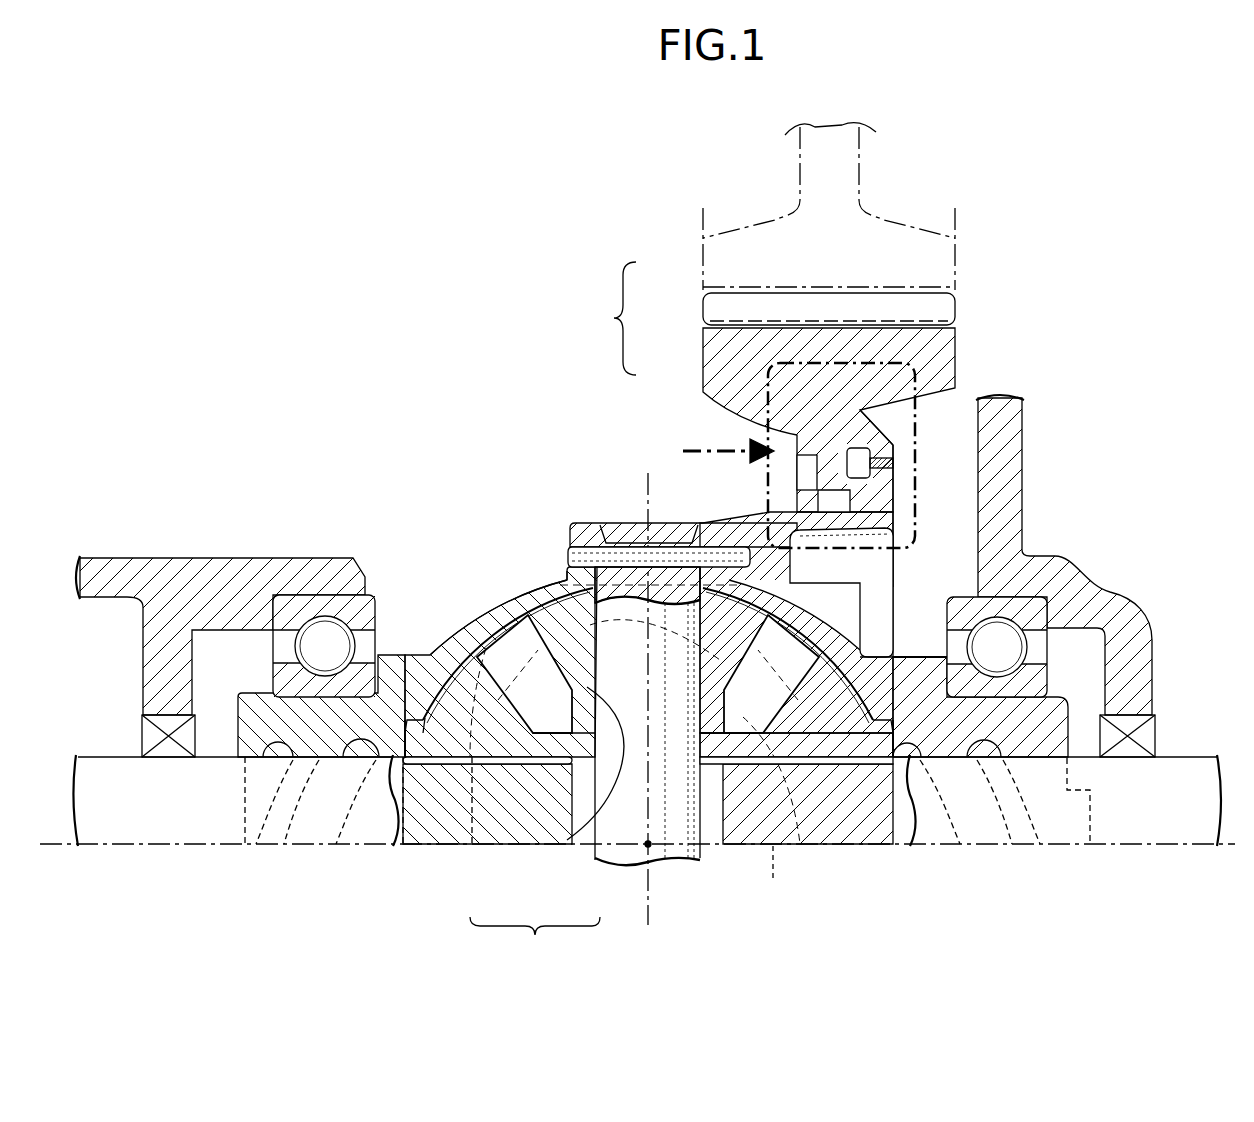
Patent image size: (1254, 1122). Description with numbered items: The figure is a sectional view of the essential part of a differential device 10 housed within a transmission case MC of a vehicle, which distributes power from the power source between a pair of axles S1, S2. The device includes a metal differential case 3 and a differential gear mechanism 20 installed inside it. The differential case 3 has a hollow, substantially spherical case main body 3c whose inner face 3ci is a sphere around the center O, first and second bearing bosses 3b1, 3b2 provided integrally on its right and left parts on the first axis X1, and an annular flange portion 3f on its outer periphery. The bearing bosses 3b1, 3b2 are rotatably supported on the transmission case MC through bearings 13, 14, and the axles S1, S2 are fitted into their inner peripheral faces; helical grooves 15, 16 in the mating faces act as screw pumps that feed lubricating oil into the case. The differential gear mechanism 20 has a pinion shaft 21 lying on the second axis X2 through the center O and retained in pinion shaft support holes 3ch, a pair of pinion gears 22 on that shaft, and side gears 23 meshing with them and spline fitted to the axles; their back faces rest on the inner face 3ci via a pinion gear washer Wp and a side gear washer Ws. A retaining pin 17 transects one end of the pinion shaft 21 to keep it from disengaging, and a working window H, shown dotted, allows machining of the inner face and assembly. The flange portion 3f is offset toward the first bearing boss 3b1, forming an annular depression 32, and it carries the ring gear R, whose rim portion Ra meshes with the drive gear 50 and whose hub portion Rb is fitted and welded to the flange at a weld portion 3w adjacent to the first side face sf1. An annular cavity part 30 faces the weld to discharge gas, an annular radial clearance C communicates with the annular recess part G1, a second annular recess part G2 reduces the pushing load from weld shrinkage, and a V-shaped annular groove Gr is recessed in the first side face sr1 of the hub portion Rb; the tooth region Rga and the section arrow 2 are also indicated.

The drive gear 50 is at (800, 155).
The ring gear R is at (616, 318).
The rim portion Ra is at (702, 349).
The hub portion Rb is at (795, 441).
The rotor gap Rga is at (822, 312).
The cavity part 30 is at (860, 452).
The weld portion 3w is at (893, 465).
The first side face sr1 is at (896, 452).
The first side face sf1 is at (895, 500).
The annular groove Gr is at (866, 426).
The annular recess part G1 is at (846, 496).
The second annular recess part G2 is at (800, 470).
The flange portion 3f is at (833, 513).
The radial clearance C is at (841, 592).
The section arrow 2 is at (784, 455).
The differential device 10 is at (497, 518).
The differential case 3 is at (576, 523).
The pinion shaft support hole 3ch is at (614, 524).
The case main body 3c is at (470, 616).
The inner face 3ci is at (500, 645).
The side gear washer Ws is at (423, 713).
The pinion gear washer Wp is at (568, 580).
The retaining pin 17 is at (685, 554).
The transmission case MC is at (122, 557).
The bearing 14 is at (322, 630).
The bearing 13 is at (948, 599).
The second bearing boss 3b2 is at (258, 702).
The first bearing boss 3b1 is at (1030, 722).
The annular depression 32 is at (867, 647).
The axle S2 is at (128, 817).
The axle S1 is at (1147, 817).
The helical groove 16 is at (275, 762).
The helical groove 15 is at (988, 762).
The differential gear mechanism 20 is at (535, 941).
The pinion shaft 21 is at (622, 833).
The pinion gear 22 is at (567, 822).
The side gear 23 is at (497, 742).
The center O is at (651, 847).
The working window H is at (771, 878).
The first axis X1 is at (1176, 848).
The second axis X2 is at (652, 903).